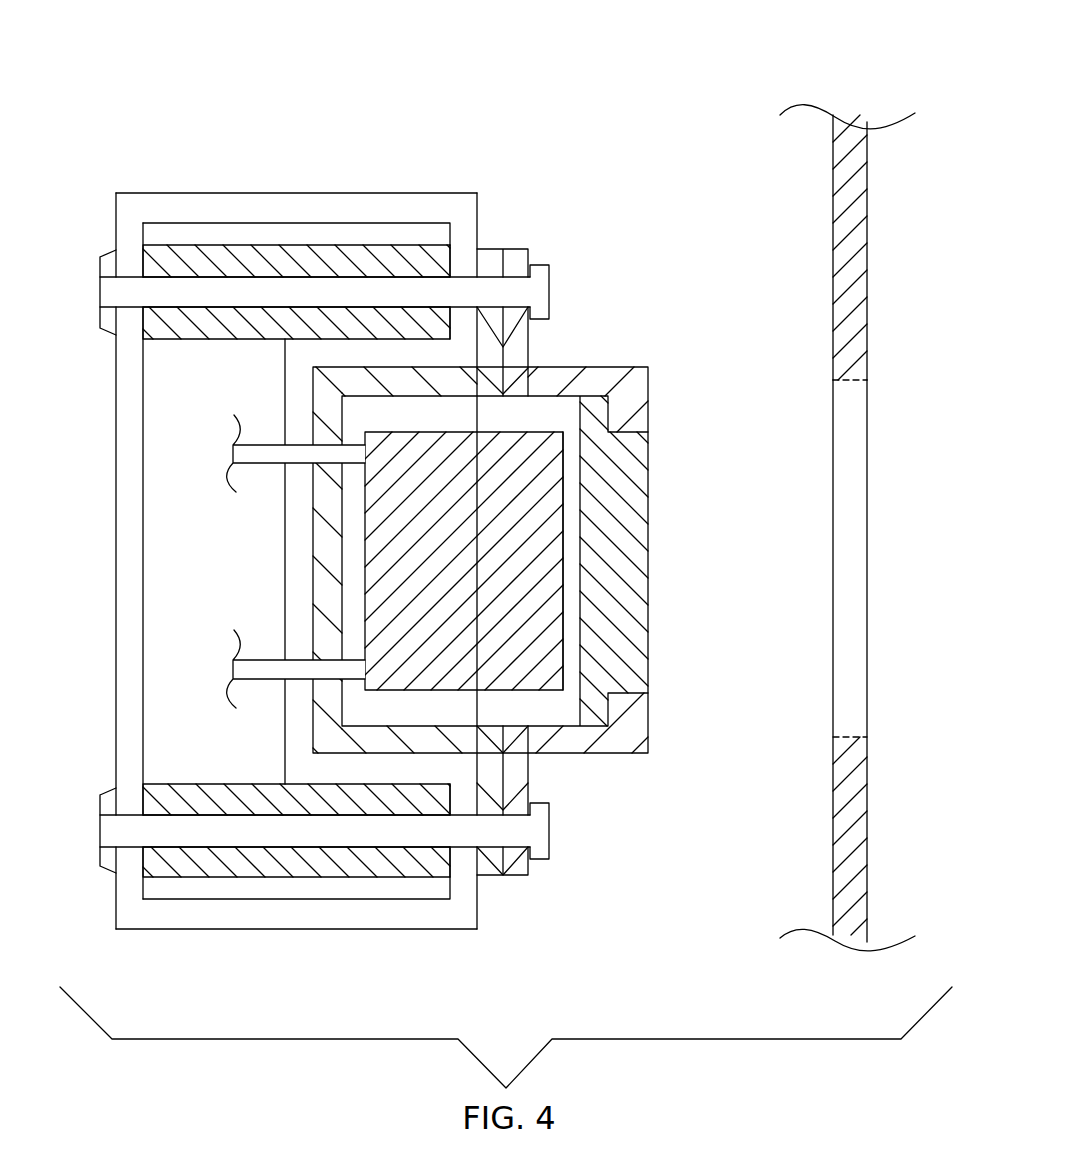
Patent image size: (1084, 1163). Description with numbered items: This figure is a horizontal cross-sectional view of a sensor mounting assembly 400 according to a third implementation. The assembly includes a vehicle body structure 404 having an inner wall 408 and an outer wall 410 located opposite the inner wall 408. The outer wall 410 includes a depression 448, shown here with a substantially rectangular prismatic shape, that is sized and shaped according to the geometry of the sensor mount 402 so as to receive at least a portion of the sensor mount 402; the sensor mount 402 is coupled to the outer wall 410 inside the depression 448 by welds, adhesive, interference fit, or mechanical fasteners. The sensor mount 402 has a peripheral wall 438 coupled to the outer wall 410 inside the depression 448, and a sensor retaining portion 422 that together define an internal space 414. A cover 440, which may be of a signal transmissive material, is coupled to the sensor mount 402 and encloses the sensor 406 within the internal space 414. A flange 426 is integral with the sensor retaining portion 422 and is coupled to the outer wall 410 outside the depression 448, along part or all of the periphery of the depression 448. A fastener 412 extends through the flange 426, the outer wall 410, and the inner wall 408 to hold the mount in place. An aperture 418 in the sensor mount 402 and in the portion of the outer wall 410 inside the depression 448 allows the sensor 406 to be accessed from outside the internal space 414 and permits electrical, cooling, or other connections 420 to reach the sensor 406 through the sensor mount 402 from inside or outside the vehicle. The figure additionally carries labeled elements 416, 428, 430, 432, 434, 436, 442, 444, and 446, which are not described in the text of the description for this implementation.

The sensor mounting assembly 400 is at (435, 86).
The sensor mount 402 is at (391, 756).
The vehicle body structure 404 is at (160, 192).
The sensor 406 is at (390, 692).
The inner wall 408 is at (117, 237).
The outer wall 410 is at (480, 903).
The fastener 412 is at (172, 277).
The internal space 414 is at (571, 500).
The magnet assembly 416 is at (481, 573).
The aperture 418 is at (295, 658).
The connections 420 is at (250, 464).
The sensor retaining portion 422 is at (312, 540).
The flange 426 is at (486, 249).
The clamp plate 428 is at (233, 277).
The nut 430 is at (550, 283).
The bolt shank 432 is at (100, 297).
The spacer plate 434 is at (300, 243).
The bolt head 436 is at (113, 334).
The peripheral wall 438 is at (403, 367).
The cover 440 is at (650, 634).
The housing bottom wall 442 is at (650, 735).
The wall upper section 444 is at (868, 228).
The wall lower section 446 is at (868, 437).
The depression 448 is at (284, 690).